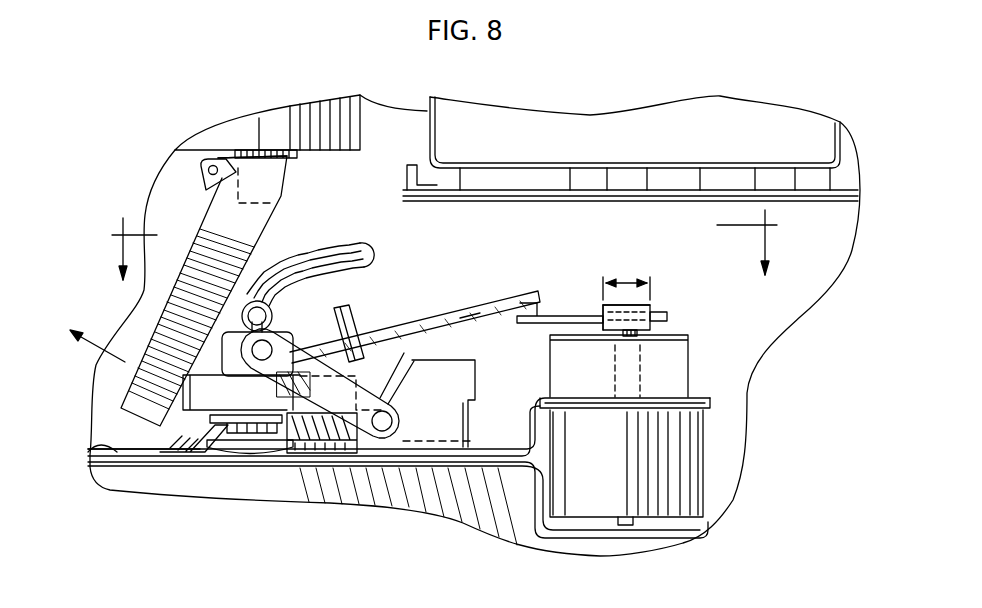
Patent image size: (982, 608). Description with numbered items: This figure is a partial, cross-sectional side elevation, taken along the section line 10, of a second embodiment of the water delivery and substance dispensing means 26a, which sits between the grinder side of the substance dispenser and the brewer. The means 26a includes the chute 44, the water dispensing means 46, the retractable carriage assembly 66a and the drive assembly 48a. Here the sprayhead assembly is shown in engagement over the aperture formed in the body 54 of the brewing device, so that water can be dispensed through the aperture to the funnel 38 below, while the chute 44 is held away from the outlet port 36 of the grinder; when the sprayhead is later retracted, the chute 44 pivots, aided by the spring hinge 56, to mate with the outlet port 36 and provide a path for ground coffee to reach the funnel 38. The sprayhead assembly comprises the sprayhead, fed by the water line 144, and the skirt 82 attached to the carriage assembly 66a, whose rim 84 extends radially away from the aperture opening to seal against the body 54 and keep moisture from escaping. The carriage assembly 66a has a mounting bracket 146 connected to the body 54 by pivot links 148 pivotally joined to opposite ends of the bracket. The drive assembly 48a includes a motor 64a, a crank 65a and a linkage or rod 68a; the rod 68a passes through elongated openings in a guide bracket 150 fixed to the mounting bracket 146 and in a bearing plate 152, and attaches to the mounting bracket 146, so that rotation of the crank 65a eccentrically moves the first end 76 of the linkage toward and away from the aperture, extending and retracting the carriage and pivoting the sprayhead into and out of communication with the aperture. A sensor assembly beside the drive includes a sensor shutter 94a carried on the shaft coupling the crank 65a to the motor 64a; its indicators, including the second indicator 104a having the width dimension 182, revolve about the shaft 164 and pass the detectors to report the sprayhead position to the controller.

The section line 10 is at (444, 247).
The water delivery and substance dispensing means 26a is at (188, 197).
The outlet port 36 is at (270, 168).
The funnel 38 is at (142, 480).
The chute 44 is at (212, 232).
The water dispensing means 46 is at (147, 440).
The drive assembly 48a is at (682, 240).
The body 54 is at (112, 447).
The spring hinge 56 is at (200, 170).
The motor 64a is at (683, 378).
The crank 65a is at (548, 305).
The retractable carriage assembly 66a is at (277, 262).
The rod 68a is at (475, 315).
The first end 76 is at (537, 302).
The skirt 82 is at (147, 458).
The rim 84 is at (160, 435).
The sensor shutter 94a is at (601, 308).
The second indicator 104a is at (668, 322).
The water line 144 is at (368, 265).
The mounting bracket 146 is at (125, 362).
The pivot links 148 is at (405, 353).
The guide bracket 150 is at (334, 308).
The bearing plate 152 is at (373, 311).
The shaft 164 is at (630, 338).
The width dimension 182 is at (628, 281).